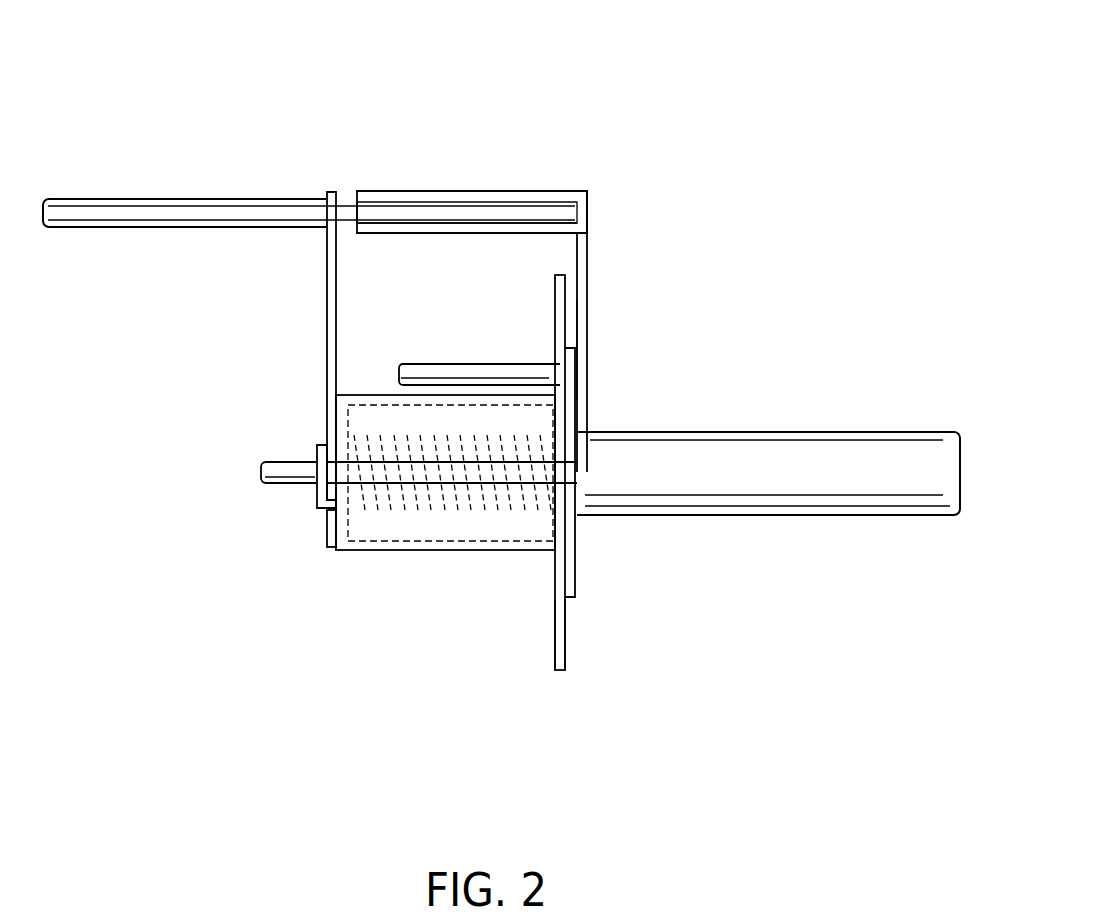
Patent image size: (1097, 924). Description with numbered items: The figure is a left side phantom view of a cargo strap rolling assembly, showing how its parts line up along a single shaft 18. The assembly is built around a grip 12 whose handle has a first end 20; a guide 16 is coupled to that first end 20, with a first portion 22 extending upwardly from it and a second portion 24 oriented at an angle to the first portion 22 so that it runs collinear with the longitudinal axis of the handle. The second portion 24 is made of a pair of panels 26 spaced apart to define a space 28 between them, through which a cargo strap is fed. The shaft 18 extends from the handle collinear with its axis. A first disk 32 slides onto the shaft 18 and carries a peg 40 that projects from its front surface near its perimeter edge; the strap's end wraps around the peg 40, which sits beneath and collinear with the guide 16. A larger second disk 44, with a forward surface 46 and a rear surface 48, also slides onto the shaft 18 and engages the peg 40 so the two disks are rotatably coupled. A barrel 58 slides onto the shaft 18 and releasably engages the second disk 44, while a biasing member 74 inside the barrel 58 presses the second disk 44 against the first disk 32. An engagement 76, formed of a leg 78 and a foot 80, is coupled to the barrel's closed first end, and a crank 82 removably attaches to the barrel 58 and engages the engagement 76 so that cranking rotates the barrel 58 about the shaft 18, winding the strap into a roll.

The grip 12 is at (655, 328).
The guide 16 is at (546, 175).
The shaft 18 is at (281, 484).
The first end 20 is at (580, 472).
The first portion 22 is at (598, 272).
The second portion 24 is at (452, 174).
The panels 26 is at (363, 232).
The space 28 is at (441, 210).
The first disk 32 is at (574, 380).
The peg 40 is at (423, 368).
The second disk 44 is at (560, 672).
The forward surface 46 is at (553, 635).
The rear surface 48 is at (566, 642).
The barrel 58 is at (397, 552).
The biasing member 74 is at (460, 507).
The engagement 76 is at (317, 511).
The leg 78 is at (332, 548).
The foot 80 is at (316, 457).
The crank 82 is at (277, 186).